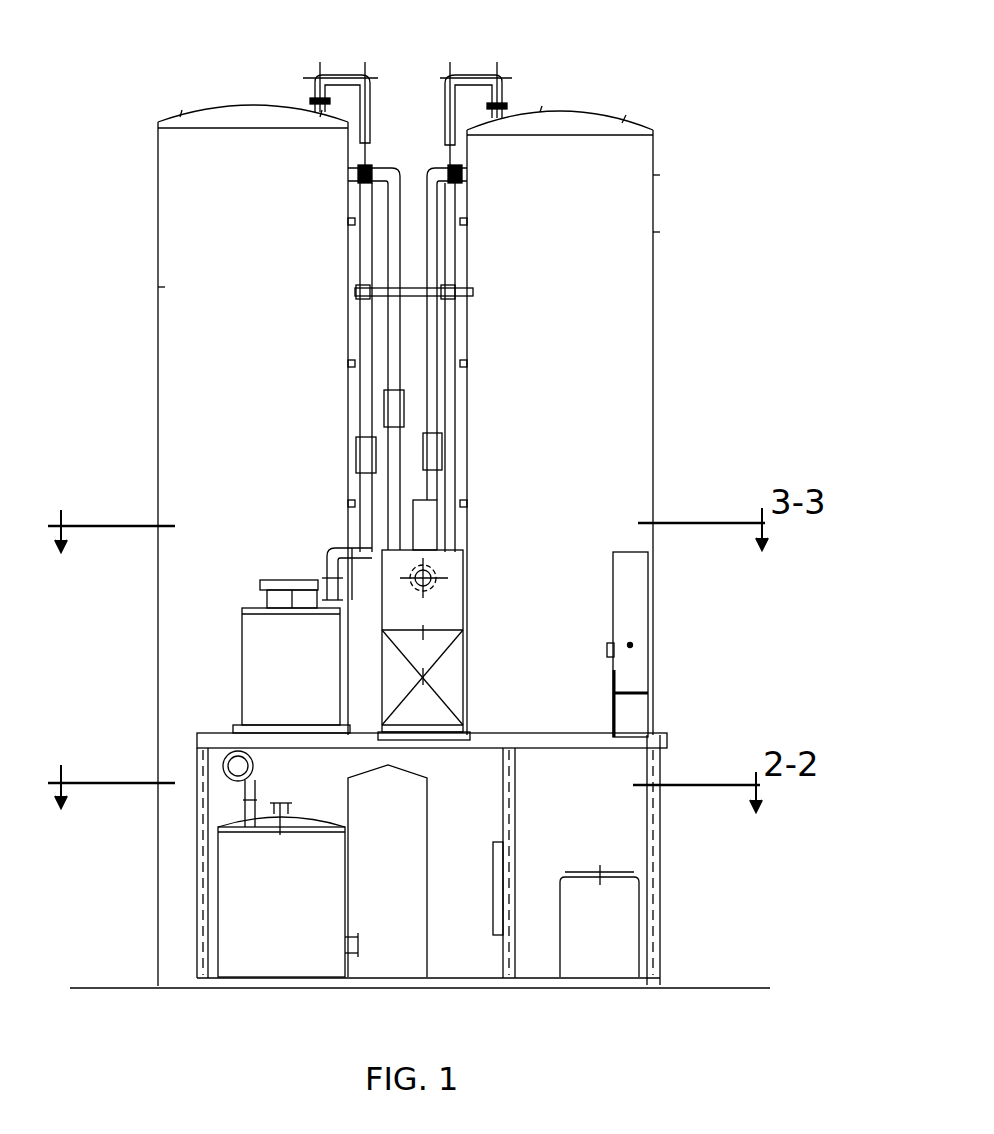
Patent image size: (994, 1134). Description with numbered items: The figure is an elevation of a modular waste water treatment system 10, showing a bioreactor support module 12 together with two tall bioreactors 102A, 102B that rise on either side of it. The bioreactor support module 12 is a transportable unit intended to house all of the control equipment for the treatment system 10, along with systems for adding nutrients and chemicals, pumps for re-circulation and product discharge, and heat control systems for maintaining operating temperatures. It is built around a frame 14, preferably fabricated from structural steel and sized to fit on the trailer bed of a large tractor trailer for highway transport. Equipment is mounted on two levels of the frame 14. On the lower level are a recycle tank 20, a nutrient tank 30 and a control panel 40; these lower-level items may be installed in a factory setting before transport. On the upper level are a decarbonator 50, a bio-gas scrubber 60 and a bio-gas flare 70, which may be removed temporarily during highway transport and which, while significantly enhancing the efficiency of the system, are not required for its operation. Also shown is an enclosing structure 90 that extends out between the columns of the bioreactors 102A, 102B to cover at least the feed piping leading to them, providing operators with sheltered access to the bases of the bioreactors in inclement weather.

The modular waste water treatment system 10 is at (584, 60).
The bioreactor support module 12 is at (684, 860).
The frame 14 is at (660, 935).
The recycle tank 20 is at (294, 888).
The nutrient tank 30 is at (614, 932).
The control panel 40 is at (497, 888).
The decarbonator 50 is at (436, 620).
The bio-gas scrubber 60 is at (303, 658).
The bio-gas flare 70 is at (642, 607).
The enclosing structure 90 is at (401, 852).
The bioreactor 102A is at (282, 209).
The bioreactor 102B is at (583, 220).